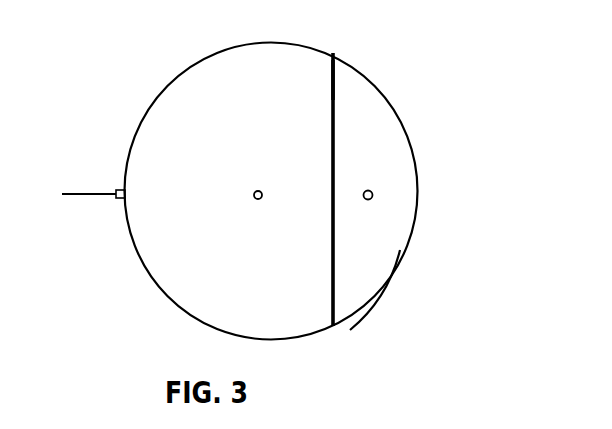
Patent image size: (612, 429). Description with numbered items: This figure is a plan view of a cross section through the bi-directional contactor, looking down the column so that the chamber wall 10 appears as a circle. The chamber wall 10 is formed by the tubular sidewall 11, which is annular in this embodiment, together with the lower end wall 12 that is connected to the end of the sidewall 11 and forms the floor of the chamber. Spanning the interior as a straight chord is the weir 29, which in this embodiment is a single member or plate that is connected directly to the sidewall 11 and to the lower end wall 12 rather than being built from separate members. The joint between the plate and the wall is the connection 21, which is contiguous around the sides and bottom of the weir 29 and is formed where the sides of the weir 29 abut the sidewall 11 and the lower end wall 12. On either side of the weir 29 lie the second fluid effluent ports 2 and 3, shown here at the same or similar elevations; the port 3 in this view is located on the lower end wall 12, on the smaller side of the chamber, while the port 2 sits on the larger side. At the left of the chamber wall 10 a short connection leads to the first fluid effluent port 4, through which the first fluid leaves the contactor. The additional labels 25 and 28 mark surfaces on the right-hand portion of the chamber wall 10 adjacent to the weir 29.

The second fluid effluent port 2 is at (254, 196).
The second fluid effluent port 3 is at (371, 191).
The first fluid effluent port 4 is at (75, 197).
The chamber wall 10 is at (117, 188).
The sidewall 11 is at (131, 148).
The lower end wall 12 is at (358, 280).
The connection 21 is at (334, 54).
The outer circumference 25 is at (403, 185).
The arc surface 28 is at (403, 117).
The weir 29 is at (336, 80).